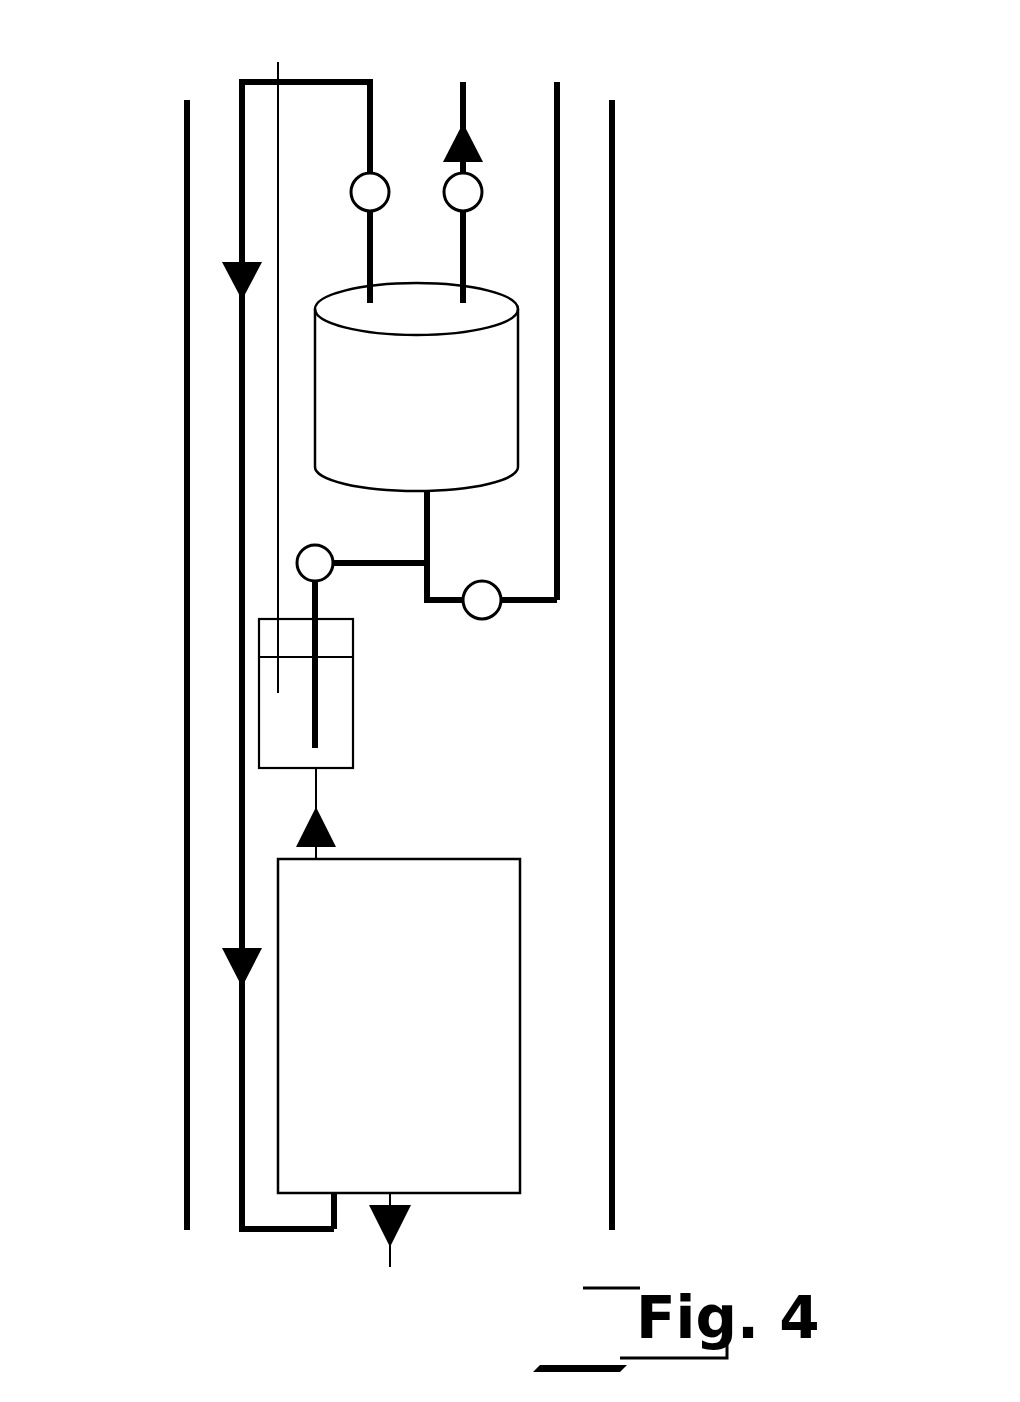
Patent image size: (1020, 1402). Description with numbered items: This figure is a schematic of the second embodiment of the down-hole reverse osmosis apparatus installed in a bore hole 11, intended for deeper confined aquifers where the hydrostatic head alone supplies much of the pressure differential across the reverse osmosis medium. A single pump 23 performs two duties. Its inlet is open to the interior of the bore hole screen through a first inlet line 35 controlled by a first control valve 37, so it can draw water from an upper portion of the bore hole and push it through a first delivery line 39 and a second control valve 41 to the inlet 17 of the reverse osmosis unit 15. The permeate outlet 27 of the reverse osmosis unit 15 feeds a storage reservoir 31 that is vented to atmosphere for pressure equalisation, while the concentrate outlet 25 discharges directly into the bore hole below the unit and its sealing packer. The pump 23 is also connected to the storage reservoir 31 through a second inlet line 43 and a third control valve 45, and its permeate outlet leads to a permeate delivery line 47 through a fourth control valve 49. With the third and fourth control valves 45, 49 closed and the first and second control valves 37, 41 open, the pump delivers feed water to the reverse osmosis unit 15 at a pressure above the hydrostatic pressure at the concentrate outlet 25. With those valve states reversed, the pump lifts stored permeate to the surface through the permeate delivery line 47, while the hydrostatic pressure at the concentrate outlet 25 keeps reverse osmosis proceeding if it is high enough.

The wellbore 11 is at (612, 883).
The reverse osmosis unit 15 is at (462, 1019).
The inlet 17 is at (334, 1206).
The pump 23 is at (488, 353).
The concentrate outlet 25 is at (392, 1200).
The permeate outlet 27 is at (323, 857).
The storage reservoir 31 is at (353, 685).
The first inlet line 35 is at (278, 416).
The first control valve 37 is at (495, 612).
The first delivery line 39 is at (240, 598).
The second control valve 41 is at (385, 190).
The second inlet line 43 is at (375, 560).
The third control valve 45 is at (297, 558).
The permeate delivery line 47 is at (465, 95).
The fourth control valve 49 is at (467, 190).